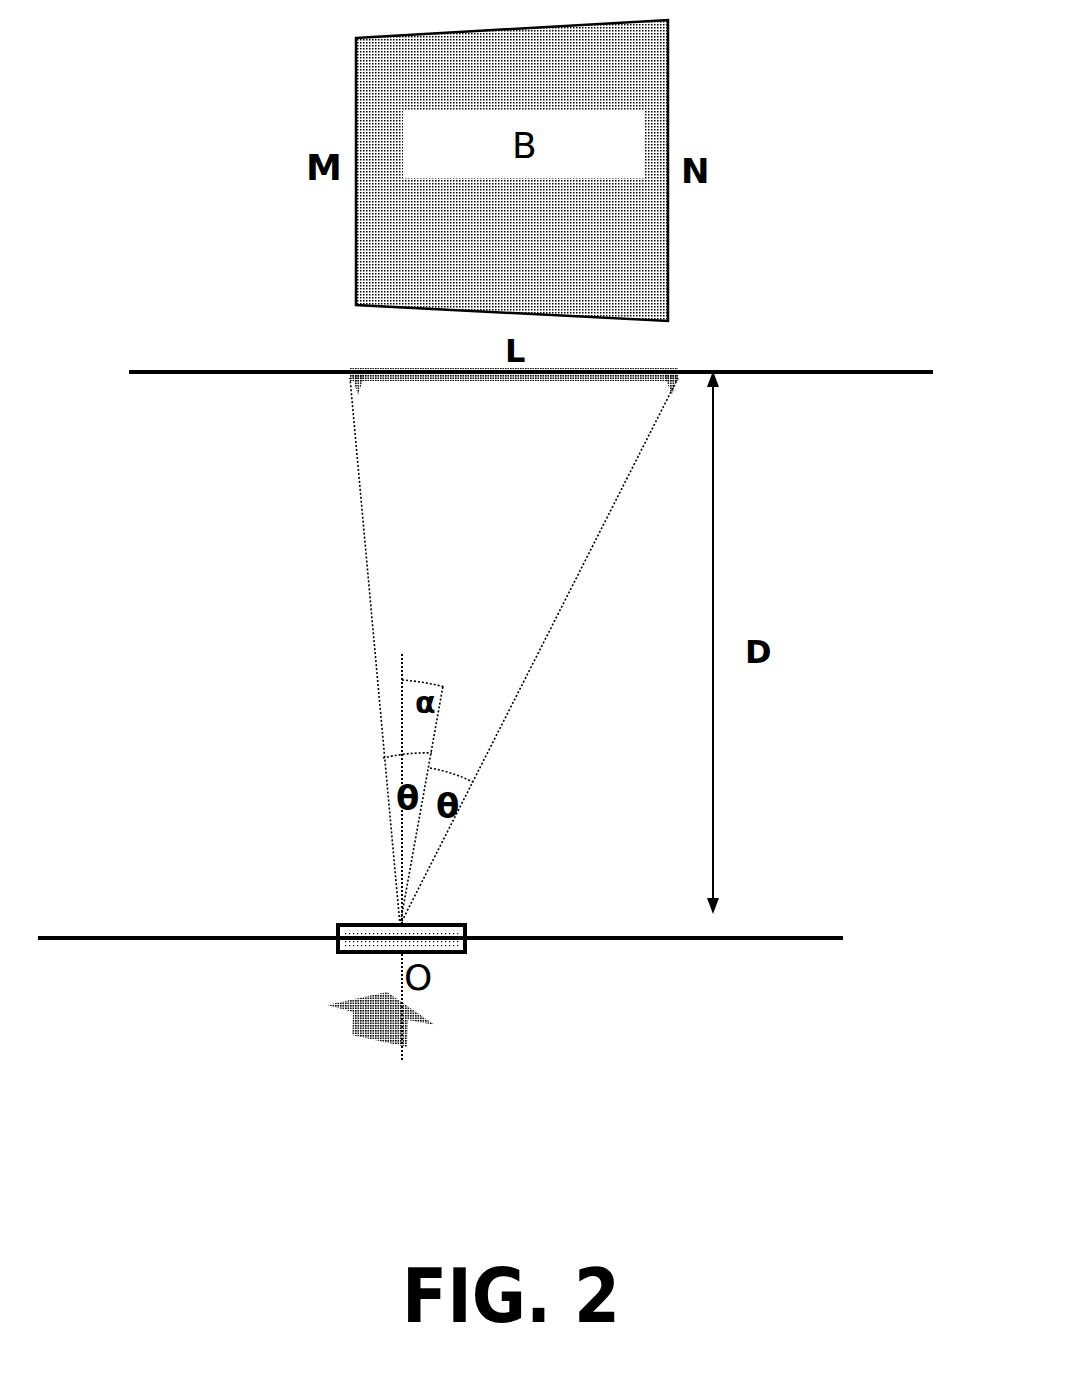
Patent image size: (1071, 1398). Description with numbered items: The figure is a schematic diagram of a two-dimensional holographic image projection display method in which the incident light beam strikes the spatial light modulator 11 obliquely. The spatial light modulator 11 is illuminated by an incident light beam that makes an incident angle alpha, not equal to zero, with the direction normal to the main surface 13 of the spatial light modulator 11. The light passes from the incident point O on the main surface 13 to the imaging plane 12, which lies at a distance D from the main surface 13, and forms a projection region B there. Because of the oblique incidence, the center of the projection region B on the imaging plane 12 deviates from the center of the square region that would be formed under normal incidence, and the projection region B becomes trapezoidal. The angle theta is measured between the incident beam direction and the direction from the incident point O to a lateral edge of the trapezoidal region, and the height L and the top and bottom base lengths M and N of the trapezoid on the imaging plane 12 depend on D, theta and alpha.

The spatial light modulator 11 is at (362, 925).
The imaging plane 12 is at (808, 368).
The main surface 13 is at (797, 937).